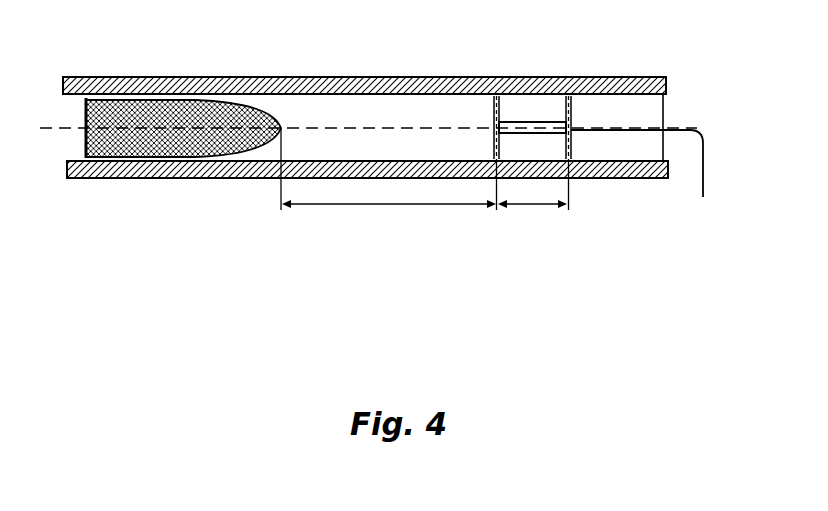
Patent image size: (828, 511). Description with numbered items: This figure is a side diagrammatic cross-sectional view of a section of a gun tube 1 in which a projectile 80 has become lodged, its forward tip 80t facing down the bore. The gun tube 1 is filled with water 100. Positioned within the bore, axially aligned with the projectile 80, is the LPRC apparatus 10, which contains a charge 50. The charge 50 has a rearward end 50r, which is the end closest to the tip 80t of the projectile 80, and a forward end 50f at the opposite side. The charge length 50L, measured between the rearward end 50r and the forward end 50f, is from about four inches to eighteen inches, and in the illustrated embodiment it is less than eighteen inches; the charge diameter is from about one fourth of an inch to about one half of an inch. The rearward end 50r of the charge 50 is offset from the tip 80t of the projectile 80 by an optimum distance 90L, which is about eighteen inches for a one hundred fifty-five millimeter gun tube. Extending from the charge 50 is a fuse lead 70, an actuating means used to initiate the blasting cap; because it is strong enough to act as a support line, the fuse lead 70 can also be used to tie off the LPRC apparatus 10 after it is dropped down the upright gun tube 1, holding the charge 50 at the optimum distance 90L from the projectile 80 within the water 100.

The gun tube 1 is at (203, 87).
The LPRC apparatus 10 is at (507, 95).
The charge 50 is at (538, 121).
The rearward end of the charge 50r is at (498, 196).
The forward end of the charge 50f is at (568, 195).
The charge length 50L is at (543, 205).
The fuse lead 70 is at (700, 167).
The lodged projectile 80 is at (232, 107).
The forward tip of the projectile 80t is at (280, 181).
The optimum distance 90L is at (343, 205).
The water 100 is at (443, 113).